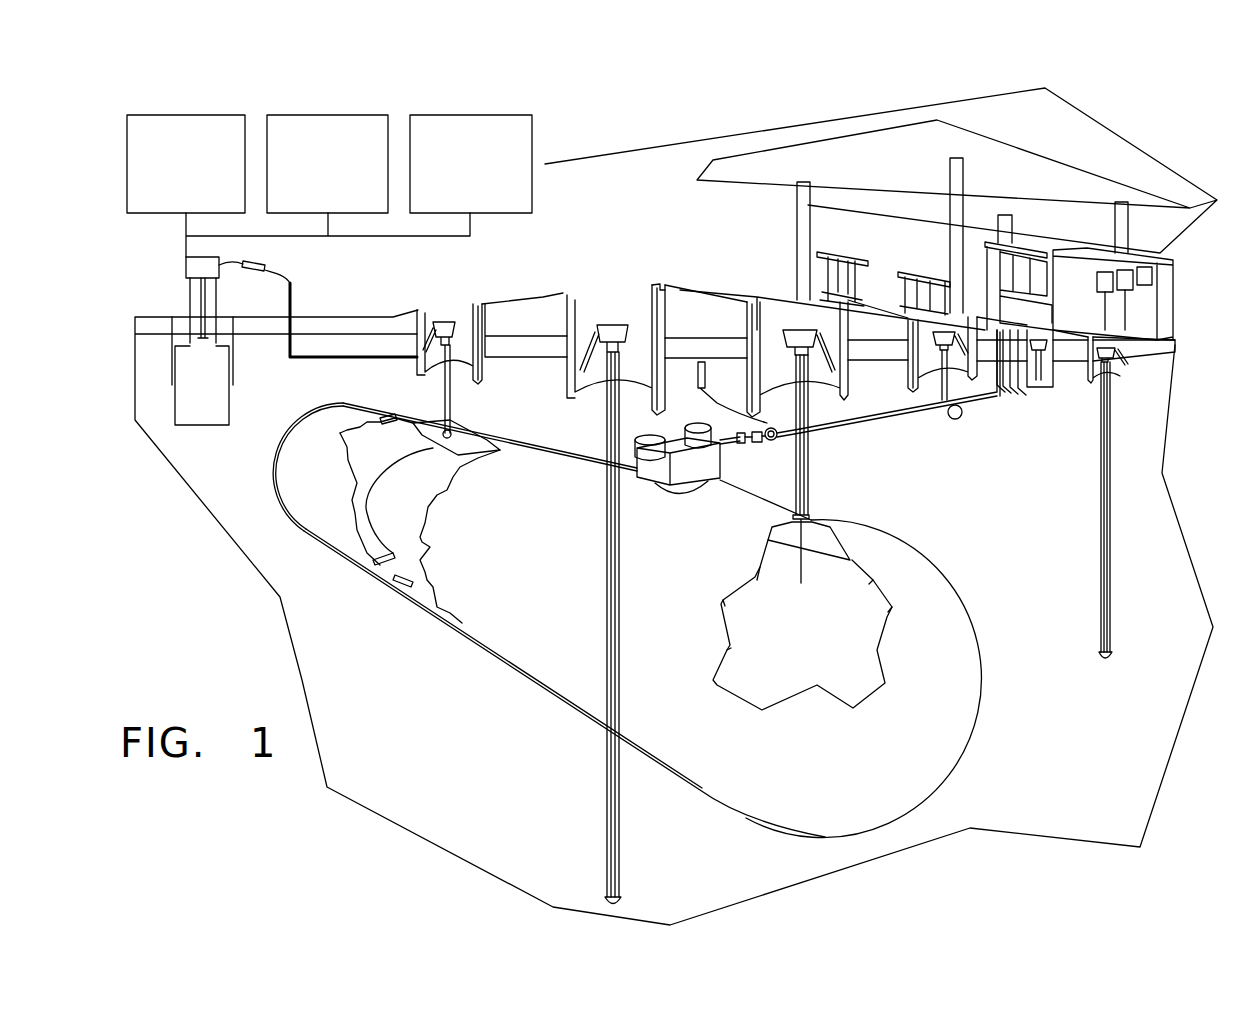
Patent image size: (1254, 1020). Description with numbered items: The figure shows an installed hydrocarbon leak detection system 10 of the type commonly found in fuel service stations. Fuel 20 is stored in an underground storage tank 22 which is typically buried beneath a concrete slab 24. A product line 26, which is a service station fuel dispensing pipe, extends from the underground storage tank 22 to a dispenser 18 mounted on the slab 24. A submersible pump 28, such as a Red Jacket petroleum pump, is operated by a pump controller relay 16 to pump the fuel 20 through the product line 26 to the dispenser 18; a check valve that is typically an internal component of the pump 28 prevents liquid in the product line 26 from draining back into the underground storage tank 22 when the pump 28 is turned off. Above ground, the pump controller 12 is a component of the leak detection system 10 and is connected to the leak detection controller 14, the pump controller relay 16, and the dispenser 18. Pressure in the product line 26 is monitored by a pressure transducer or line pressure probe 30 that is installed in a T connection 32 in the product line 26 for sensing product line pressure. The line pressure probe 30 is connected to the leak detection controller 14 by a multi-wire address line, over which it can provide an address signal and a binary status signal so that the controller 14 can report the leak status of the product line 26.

The hydrocarbon leak detection system 10 is at (640, 135).
The pump controller 12 is at (491, 114).
The leak detection controller 14 is at (205, 114).
The pump controller relay 16 is at (348, 114).
The dispenser 18 is at (993, 265).
The fuel 20 is at (790, 676).
The underground storage tank 22 is at (957, 640).
The concrete slab 24 is at (147, 327).
The product line 26 is at (880, 418).
The submersible pump 28 is at (700, 466).
The line pressure probe 30 is at (758, 445).
The T connection 32 is at (800, 443).